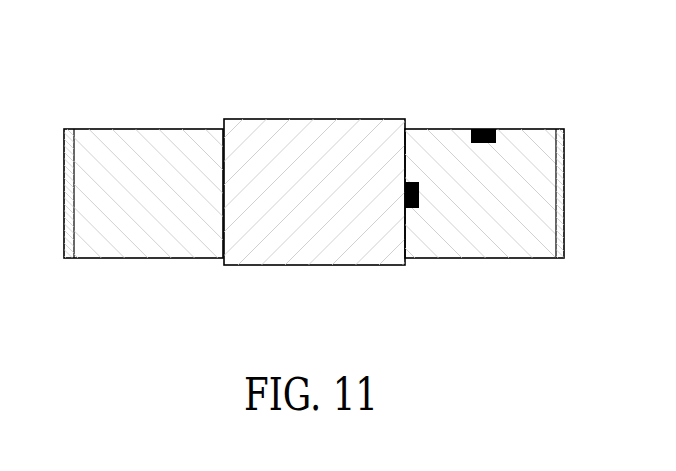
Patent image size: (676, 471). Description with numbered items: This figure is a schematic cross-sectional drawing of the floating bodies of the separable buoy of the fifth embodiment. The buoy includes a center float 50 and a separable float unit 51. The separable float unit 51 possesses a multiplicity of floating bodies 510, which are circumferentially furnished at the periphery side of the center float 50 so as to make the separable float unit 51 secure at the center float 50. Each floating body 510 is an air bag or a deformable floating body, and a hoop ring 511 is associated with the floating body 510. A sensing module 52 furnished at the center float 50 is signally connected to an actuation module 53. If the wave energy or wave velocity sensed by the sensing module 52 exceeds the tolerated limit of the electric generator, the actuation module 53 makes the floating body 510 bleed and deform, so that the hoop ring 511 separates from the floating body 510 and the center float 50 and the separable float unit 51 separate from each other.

The separable float unit 51 is at (553, 66).
The center float 50 is at (310, 142).
The floating body 510 is at (512, 232).
The hoop ring 511 is at (562, 192).
The sensing module 52 is at (419, 182).
The actuation module 53 is at (492, 128).